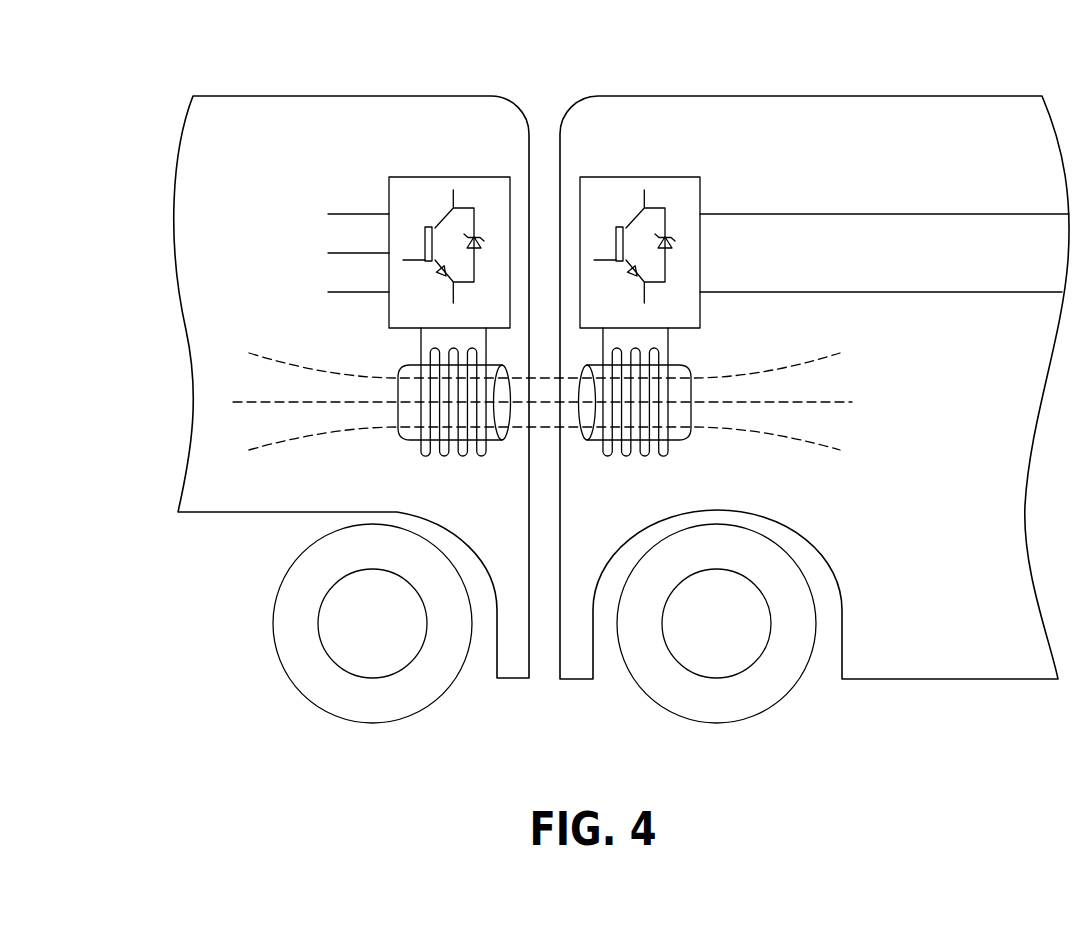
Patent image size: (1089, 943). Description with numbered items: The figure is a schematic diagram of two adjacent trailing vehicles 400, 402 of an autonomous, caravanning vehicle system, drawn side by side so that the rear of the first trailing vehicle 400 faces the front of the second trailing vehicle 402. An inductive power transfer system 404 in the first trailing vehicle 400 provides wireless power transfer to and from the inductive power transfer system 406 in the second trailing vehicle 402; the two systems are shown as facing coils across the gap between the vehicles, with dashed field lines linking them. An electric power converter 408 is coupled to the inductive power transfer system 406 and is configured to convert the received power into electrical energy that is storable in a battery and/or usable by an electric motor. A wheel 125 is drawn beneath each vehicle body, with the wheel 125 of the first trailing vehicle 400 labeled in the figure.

The first trailing vehicle 400 is at (388, 96).
The second trailing vehicle 402 is at (967, 96).
The inductive power transfer system 404 is at (417, 422).
The inductive power transfer system 406 is at (658, 413).
The electric power converter 408 is at (627, 177).
The wheel 125 is at (387, 710).